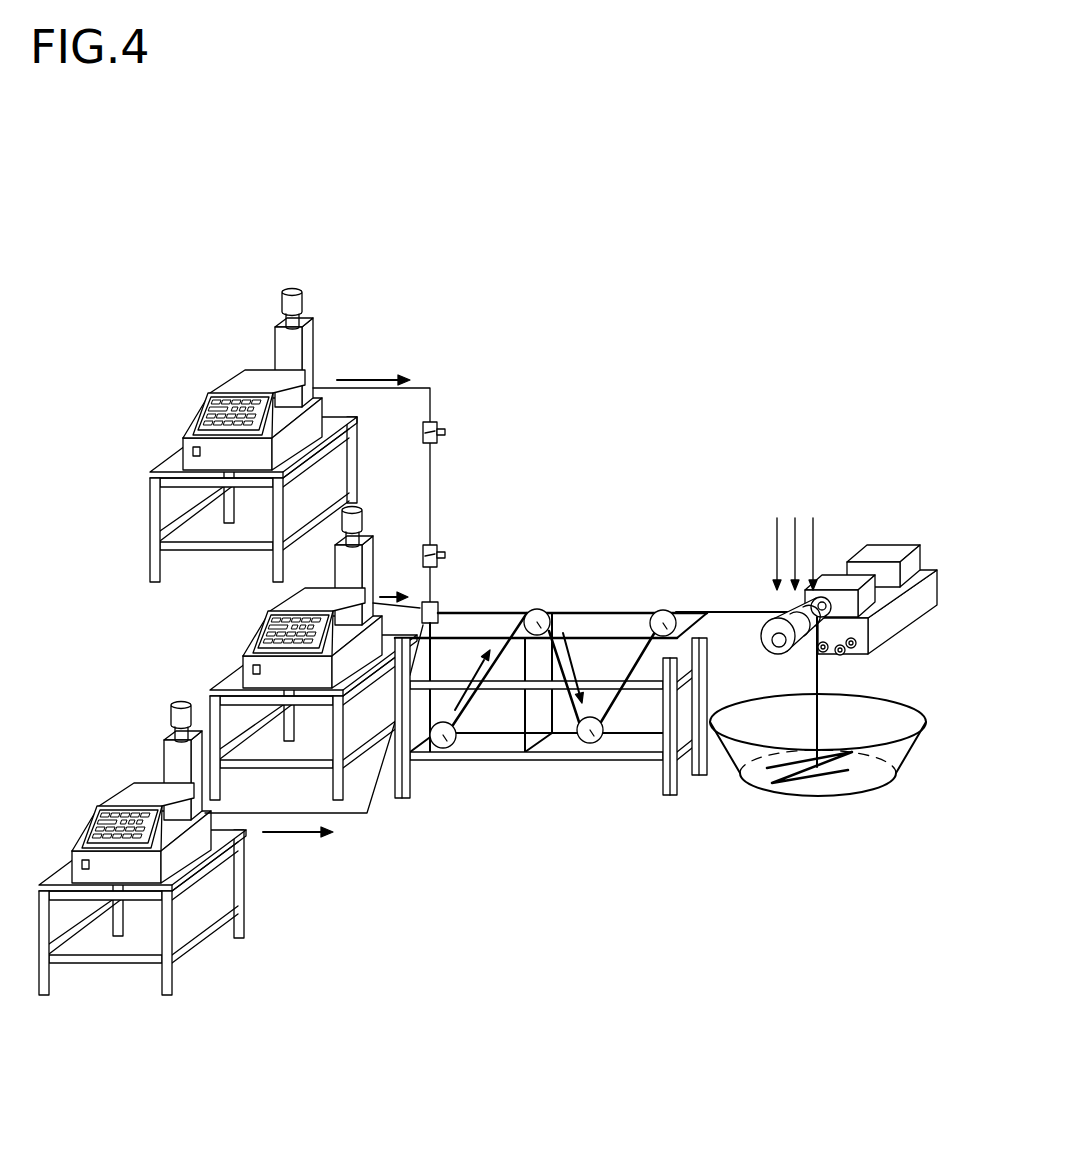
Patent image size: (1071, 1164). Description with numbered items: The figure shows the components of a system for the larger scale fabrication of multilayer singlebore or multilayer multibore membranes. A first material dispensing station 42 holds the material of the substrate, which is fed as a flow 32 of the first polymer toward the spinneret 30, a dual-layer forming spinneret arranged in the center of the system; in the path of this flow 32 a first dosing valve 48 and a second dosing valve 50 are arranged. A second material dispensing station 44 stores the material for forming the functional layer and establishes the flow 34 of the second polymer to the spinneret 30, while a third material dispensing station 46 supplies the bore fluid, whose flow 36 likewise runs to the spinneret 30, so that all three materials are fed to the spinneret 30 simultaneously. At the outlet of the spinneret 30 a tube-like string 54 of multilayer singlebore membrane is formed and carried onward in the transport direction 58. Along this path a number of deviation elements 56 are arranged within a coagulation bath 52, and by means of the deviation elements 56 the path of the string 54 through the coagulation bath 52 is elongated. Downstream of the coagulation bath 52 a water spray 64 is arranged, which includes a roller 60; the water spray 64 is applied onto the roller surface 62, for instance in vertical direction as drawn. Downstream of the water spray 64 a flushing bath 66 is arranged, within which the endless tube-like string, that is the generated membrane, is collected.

The spinneret 30 is at (450, 593).
The flow of the first polymer 32 is at (373, 383).
The flow of the second polymer 34 is at (314, 745).
The flow of the bore fluid 36 is at (396, 594).
The first material dispensing station 42 is at (307, 342).
The second material dispensing station 44 is at (172, 757).
The third material dispensing station 46 is at (345, 572).
The first dosing valve 48 is at (447, 430).
The second dosing valve 50 is at (437, 547).
The coagulation bath 52 is at (480, 780).
The tube-like string 54 is at (433, 660).
The deviation elements 56 is at (543, 617).
The transport direction 58 is at (577, 660).
The roller 60 is at (763, 630).
The roller surface 62 is at (787, 610).
The water spray 64 is at (772, 535).
The flushing bath 66 is at (843, 780).